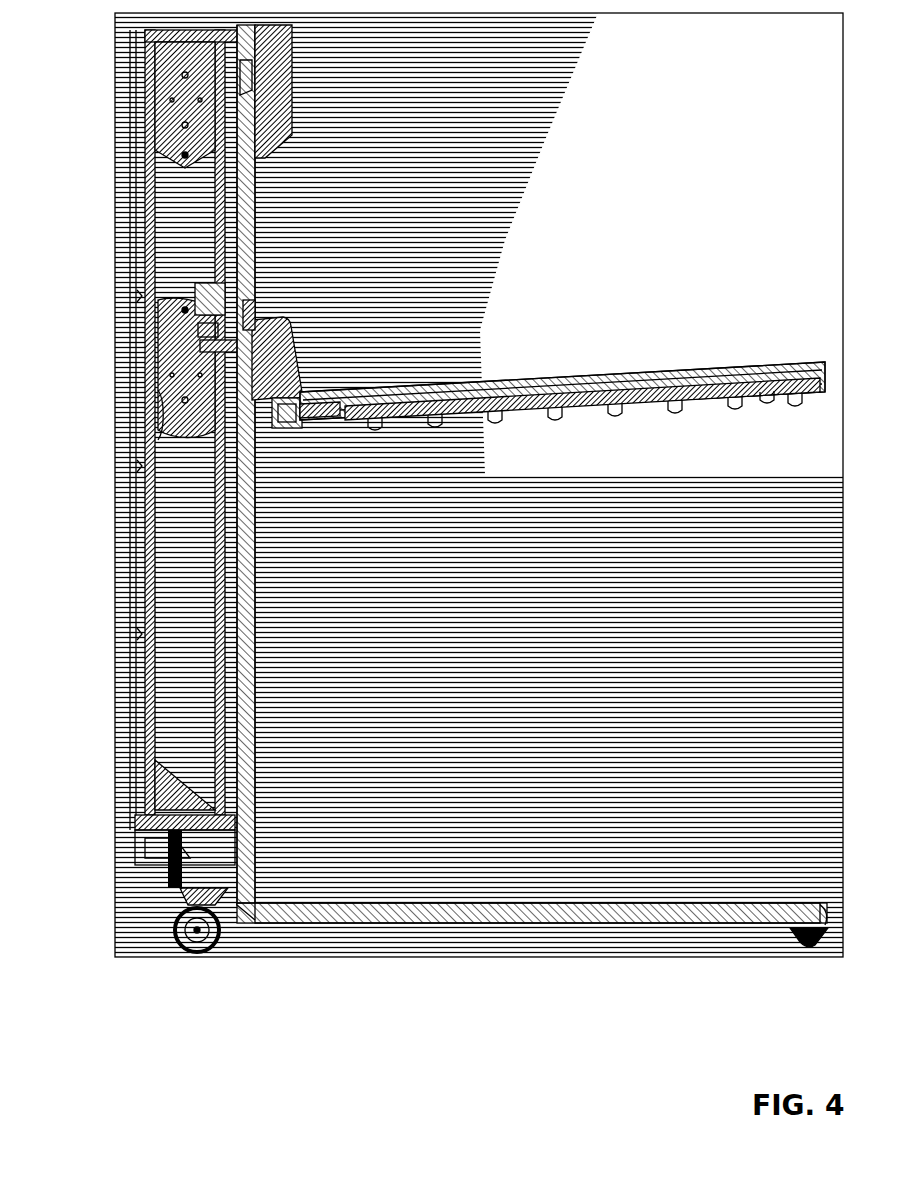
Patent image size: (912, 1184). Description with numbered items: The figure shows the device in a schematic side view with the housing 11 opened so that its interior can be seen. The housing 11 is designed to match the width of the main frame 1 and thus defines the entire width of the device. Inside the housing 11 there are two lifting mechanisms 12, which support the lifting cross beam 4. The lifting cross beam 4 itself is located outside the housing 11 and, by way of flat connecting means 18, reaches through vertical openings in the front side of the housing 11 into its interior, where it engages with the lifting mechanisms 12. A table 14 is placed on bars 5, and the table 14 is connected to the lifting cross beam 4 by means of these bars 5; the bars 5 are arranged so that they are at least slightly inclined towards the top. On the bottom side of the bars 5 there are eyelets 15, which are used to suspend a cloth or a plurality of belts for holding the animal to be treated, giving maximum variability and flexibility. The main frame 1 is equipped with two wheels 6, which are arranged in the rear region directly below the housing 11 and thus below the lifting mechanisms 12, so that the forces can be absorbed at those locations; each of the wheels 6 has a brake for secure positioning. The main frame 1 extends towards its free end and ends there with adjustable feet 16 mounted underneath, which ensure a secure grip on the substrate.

The main frame 1 is at (548, 926).
The lifting cross beam 4 is at (205, 300).
The bars 5 is at (762, 395).
The wheels 6 is at (193, 958).
The housing 11 is at (133, 598).
The lifting mechanism 12 is at (237, 205).
The table 14 is at (604, 374).
The eyelets 15 is at (498, 422).
The adjustable feet 16 is at (808, 938).
The flat connecting means 18 is at (287, 365).